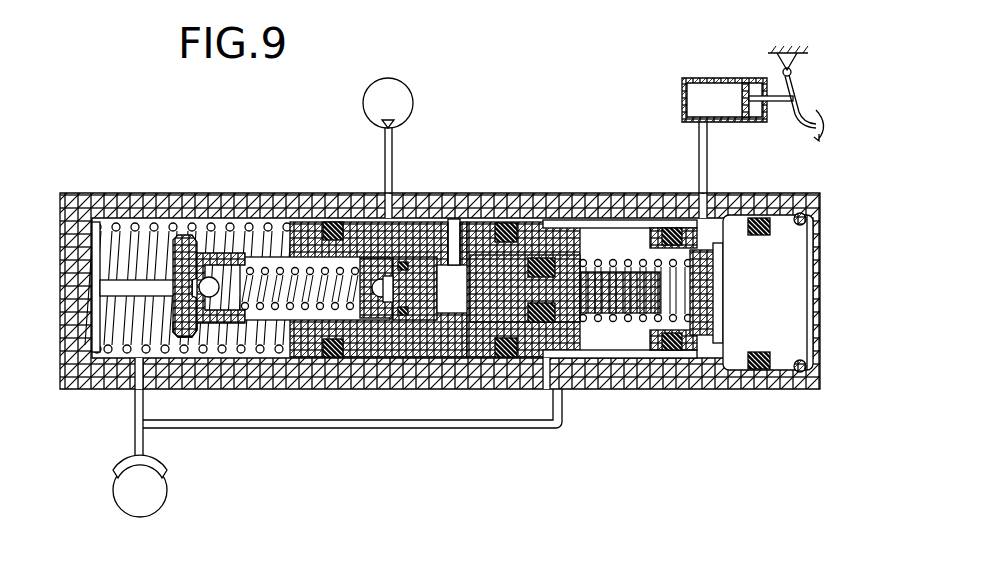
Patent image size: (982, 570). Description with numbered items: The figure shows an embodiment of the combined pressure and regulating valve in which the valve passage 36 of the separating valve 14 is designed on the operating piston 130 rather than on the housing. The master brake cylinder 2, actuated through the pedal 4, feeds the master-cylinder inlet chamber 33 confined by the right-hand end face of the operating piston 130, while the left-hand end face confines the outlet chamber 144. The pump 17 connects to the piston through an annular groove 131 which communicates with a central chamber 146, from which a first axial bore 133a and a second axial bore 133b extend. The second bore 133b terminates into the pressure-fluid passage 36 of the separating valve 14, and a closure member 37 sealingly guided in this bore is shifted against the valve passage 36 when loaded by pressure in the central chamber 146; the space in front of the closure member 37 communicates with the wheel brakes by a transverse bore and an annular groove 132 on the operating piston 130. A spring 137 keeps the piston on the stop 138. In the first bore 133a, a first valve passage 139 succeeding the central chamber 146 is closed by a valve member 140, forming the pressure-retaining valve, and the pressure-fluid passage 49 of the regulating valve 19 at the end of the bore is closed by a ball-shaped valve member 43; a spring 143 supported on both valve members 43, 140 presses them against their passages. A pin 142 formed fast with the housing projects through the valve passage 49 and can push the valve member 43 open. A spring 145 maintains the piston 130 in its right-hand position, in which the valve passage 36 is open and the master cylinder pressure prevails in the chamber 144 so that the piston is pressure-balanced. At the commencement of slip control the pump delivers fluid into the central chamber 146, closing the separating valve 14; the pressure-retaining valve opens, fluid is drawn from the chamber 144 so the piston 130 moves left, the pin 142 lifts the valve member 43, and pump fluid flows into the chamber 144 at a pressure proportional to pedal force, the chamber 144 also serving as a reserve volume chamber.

The master brake cylinder 2 is at (750, 123).
The pedal 4 is at (800, 128).
The separating valve 14 is at (687, 283).
The pump 17 is at (409, 104).
The regulating valve 19 is at (205, 277).
The master-cylinder inlet chamber 33 is at (708, 180).
The valve passage 36 is at (728, 278).
The closure member 37 is at (608, 288).
The valve member 43 is at (211, 318).
The pressure-fluid passage 49 is at (178, 328).
The operating piston 130 is at (478, 232).
The annular groove 131 is at (452, 232).
The annular groove 132 is at (573, 226).
The first axial bore 133a is at (303, 322).
The second axial bore 133b is at (547, 392).
The spring 137 is at (655, 352).
The stop 138 is at (512, 322).
The first valve passage 139 is at (424, 320).
The valve member 140 is at (388, 318).
The pin 142 is at (128, 286).
The spring 143 is at (328, 312).
The outlet chamber 144 is at (132, 232).
The spring 145 is at (177, 240).
The central chamber 146 is at (452, 313).